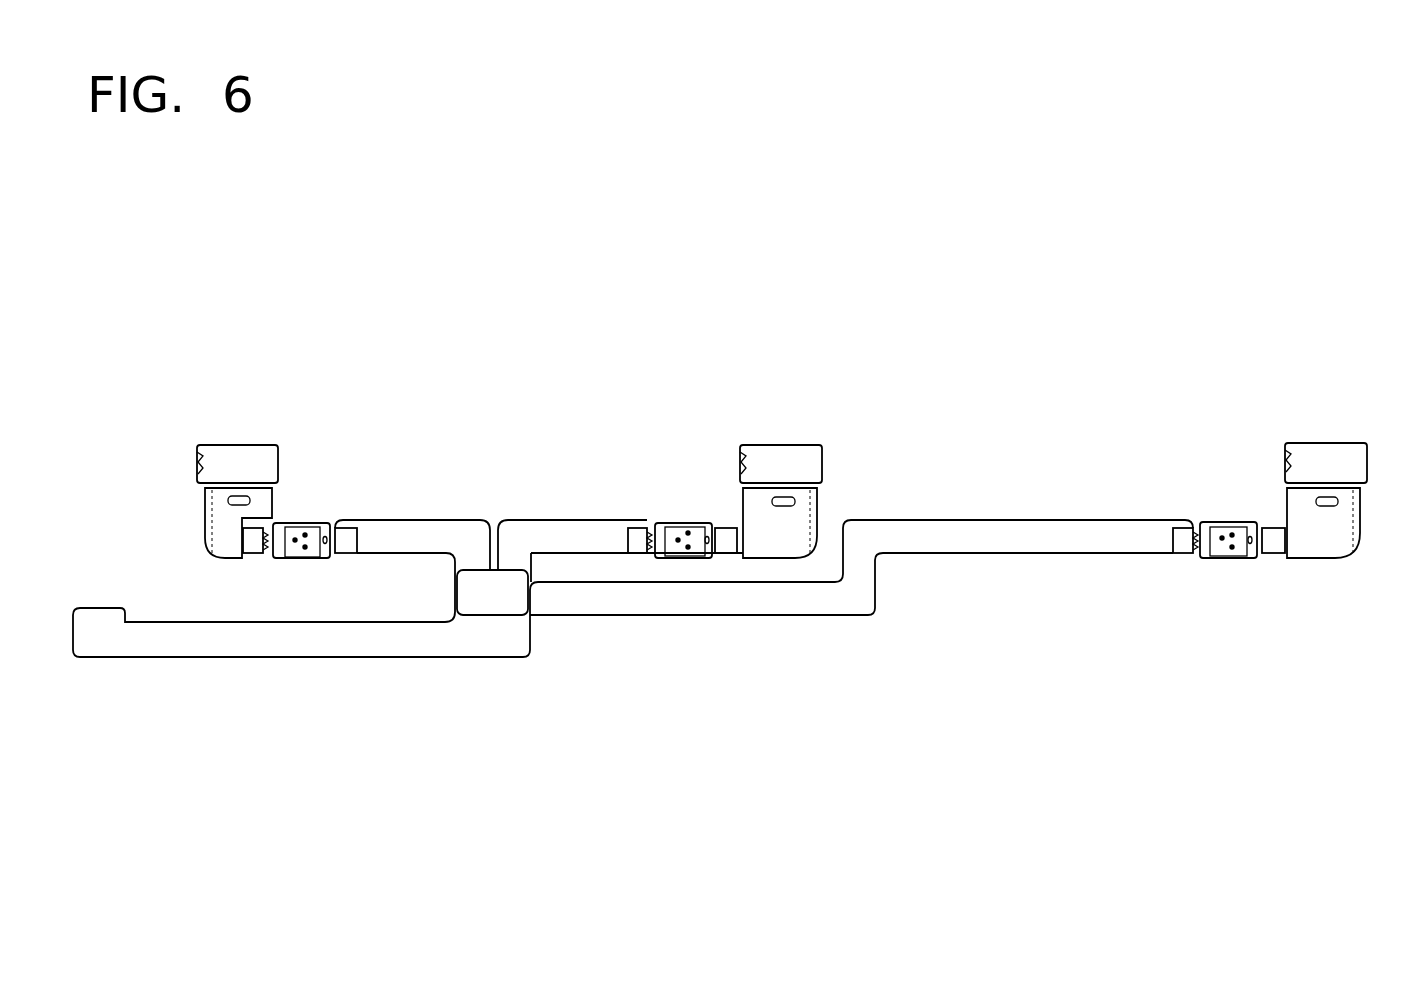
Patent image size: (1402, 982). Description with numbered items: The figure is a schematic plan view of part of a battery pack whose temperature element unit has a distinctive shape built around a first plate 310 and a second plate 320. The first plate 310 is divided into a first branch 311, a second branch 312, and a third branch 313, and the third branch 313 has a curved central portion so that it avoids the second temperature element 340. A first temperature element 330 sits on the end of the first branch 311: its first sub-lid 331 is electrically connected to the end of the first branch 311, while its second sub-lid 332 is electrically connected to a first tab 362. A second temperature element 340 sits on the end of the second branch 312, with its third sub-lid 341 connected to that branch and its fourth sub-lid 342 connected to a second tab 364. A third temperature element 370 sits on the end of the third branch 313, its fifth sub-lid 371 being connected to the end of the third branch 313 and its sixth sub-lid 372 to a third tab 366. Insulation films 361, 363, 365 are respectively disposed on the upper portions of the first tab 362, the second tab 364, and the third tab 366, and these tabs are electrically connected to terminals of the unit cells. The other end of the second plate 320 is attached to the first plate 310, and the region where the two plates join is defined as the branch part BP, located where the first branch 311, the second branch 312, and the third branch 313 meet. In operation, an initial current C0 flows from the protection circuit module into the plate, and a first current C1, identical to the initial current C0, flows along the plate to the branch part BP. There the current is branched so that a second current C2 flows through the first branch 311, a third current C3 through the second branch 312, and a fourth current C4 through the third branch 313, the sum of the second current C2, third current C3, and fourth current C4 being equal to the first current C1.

The first plate 310 is at (425, 520).
The first branch 311 is at (388, 540).
The second branch 312 is at (600, 538).
The third branch 313 is at (968, 553).
The second plate 320 is at (335, 660).
The first temperature element 330 is at (305, 506).
The first sub-lid 331 is at (262, 545).
The second sub-lid 332 is at (342, 542).
The second temperature element 340 is at (678, 505).
The third sub-lid 341 is at (640, 540).
The fourth sub-lid 342 is at (725, 540).
The insulation film 361 is at (203, 510).
The first tab 362 is at (238, 453).
The insulation film 363 is at (818, 510).
The second tab 364 is at (781, 457).
The insulation film 365 is at (1362, 510).
The third tab 366 is at (1325, 455).
The third temperature element 370 is at (1220, 505).
The fifth sub-lid 371 is at (1184, 545).
The sixth sub-lid 372 is at (1272, 545).
The branch part BP is at (490, 612).
The initial current C0 is at (98, 590).
The first current C1 is at (160, 638).
The second current C2 is at (467, 558).
The third current C3 is at (517, 558).
The fourth current C4 is at (540, 597).